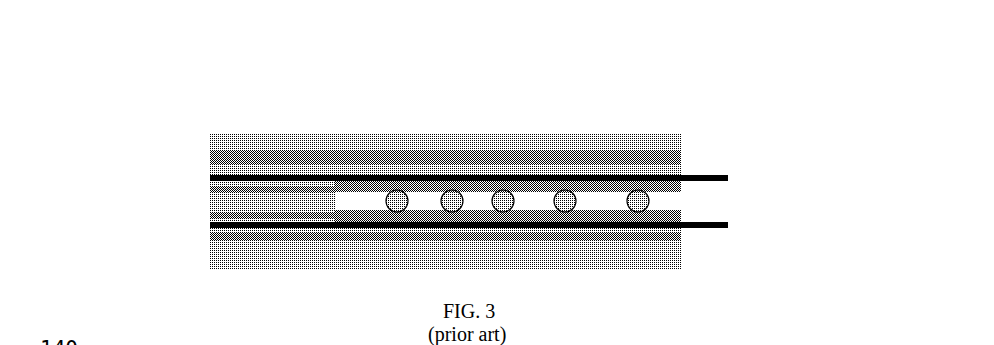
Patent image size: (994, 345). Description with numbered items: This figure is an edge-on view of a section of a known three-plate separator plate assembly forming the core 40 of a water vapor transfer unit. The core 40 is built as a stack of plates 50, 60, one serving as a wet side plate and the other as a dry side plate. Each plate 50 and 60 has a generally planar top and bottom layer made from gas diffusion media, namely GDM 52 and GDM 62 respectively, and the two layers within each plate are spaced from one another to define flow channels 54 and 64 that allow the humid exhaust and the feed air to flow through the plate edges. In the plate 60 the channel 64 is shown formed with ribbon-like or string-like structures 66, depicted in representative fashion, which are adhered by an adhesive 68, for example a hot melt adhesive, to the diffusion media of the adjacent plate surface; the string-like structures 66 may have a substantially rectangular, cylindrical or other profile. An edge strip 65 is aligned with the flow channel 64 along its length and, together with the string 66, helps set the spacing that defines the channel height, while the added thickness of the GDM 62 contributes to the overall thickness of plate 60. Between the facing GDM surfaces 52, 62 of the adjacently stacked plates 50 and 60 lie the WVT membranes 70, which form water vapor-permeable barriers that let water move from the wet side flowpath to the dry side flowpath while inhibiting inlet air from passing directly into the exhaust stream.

The core 40 is at (138, 163).
The plate 50 is at (202, 133).
The GDM 52 is at (655, 138).
The flow channel 54 is at (667, 157).
The plate 60 is at (202, 177).
The GDM 62 is at (681, 212).
The flow channel 64 is at (663, 203).
The edge strip 65 is at (318, 200).
The string-like structure 66 is at (567, 211).
The adhesive 68 is at (497, 211).
The WVT membrane 70 is at (708, 170).